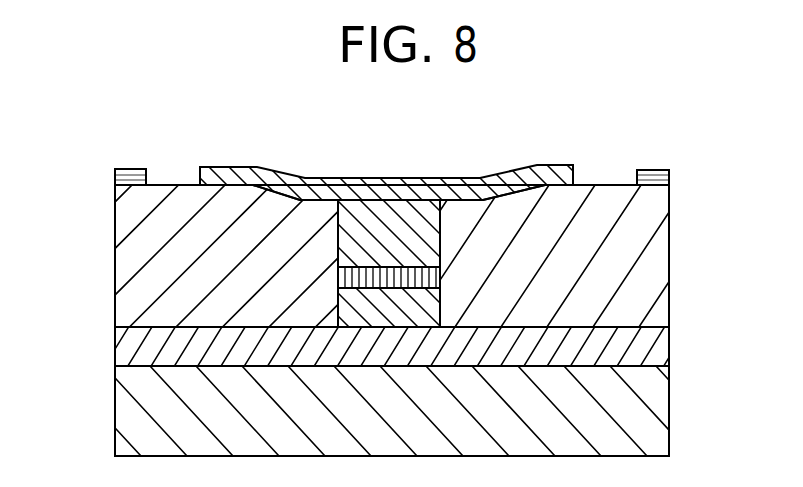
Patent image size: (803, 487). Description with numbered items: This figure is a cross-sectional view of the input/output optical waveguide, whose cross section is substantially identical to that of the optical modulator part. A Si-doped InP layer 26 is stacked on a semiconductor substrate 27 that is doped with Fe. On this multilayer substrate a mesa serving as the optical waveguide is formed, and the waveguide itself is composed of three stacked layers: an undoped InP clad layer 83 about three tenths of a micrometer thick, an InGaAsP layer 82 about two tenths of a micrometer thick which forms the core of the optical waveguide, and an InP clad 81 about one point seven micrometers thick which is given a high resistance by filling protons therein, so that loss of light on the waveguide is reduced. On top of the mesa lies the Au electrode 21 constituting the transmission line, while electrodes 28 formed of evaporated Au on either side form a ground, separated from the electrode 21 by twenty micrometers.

The electrode 21 is at (576, 169).
The InP layer 26 is at (357, 337).
The semiconductor substrate 27 is at (628, 402).
The ground electrode 28 is at (114, 177).
The InP clad 81 is at (410, 232).
The InGaAsP layer 82 is at (410, 277).
The undoped InP clad layer 83 is at (417, 302).